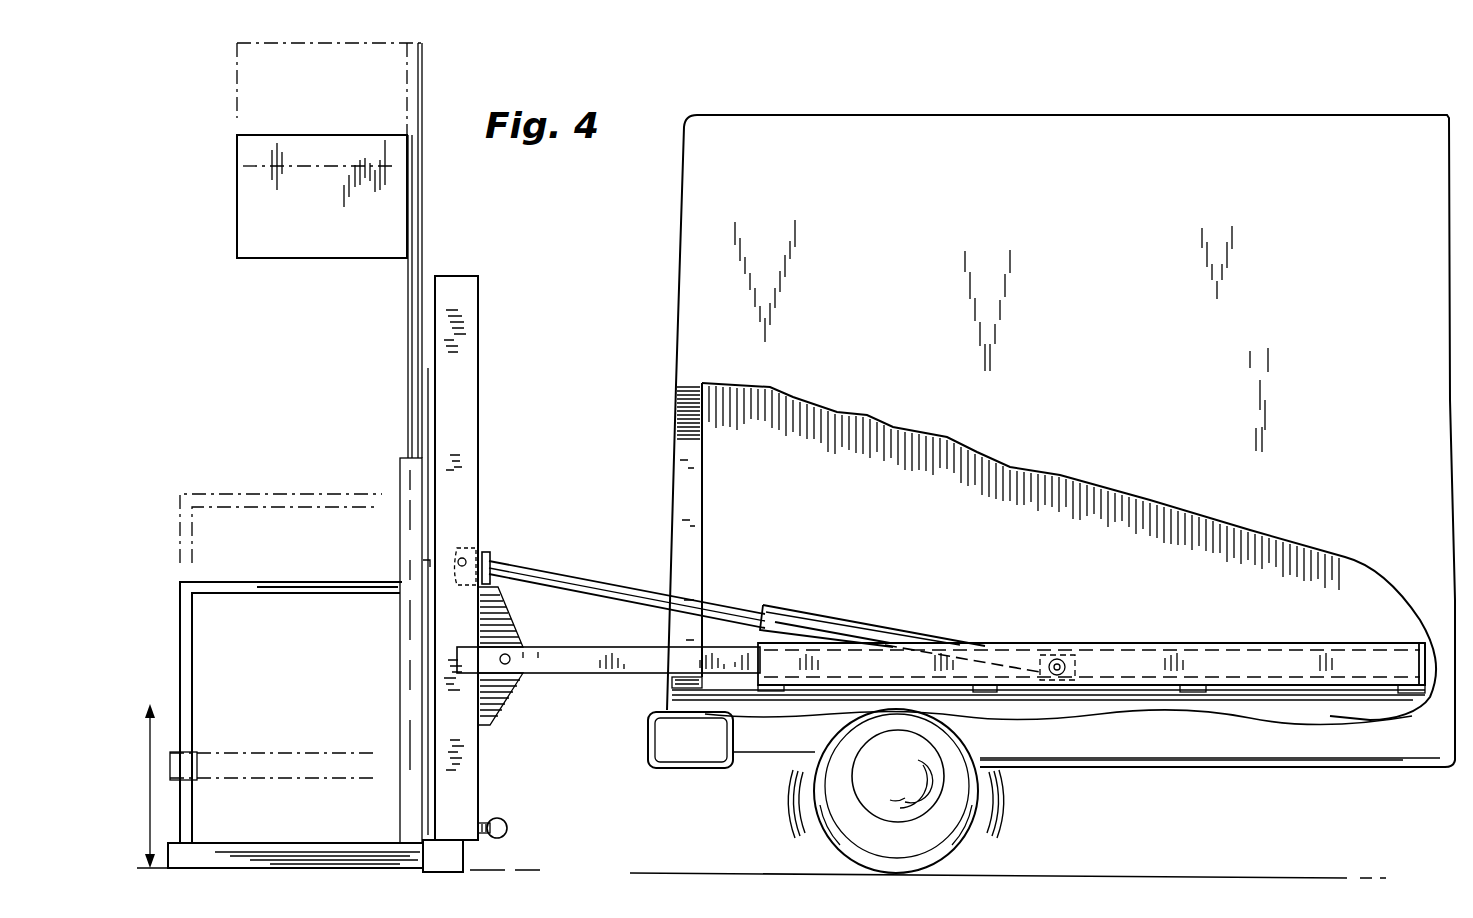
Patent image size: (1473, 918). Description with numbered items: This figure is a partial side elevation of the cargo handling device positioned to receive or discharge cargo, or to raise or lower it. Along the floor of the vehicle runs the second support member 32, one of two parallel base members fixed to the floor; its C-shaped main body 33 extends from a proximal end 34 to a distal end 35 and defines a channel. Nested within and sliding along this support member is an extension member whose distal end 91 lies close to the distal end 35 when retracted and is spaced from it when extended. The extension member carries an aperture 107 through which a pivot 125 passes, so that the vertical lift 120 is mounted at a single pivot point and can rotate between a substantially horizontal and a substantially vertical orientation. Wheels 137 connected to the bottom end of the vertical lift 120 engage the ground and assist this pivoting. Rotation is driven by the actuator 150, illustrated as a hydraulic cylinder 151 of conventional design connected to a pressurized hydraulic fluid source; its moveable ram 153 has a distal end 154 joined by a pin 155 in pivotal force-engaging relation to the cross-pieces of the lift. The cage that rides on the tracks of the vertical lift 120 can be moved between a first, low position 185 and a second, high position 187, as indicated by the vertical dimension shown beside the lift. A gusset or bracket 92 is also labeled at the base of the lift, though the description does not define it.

The vertical lift 120 is at (501, 281).
The pin 155 is at (462, 557).
The distal end 154 is at (500, 541).
The moveable ram 153 is at (603, 583).
The aperture 107 is at (519, 651).
The pivot 125 is at (509, 671).
The gusset bracket 92 is at (457, 680).
The wheels 137 is at (523, 800).
The high position 187 is at (159, 774).
The low position 185 is at (758, 882).
The hydraulic cylinder 151 is at (841, 625).
The actuator 150 is at (926, 618).
The distal end 91 is at (1082, 650).
The second support member 32 is at (1155, 645).
The C-shaped main body 33 is at (1228, 667).
The distal end 35 is at (1420, 660).
The proximal end 34 is at (757, 668).